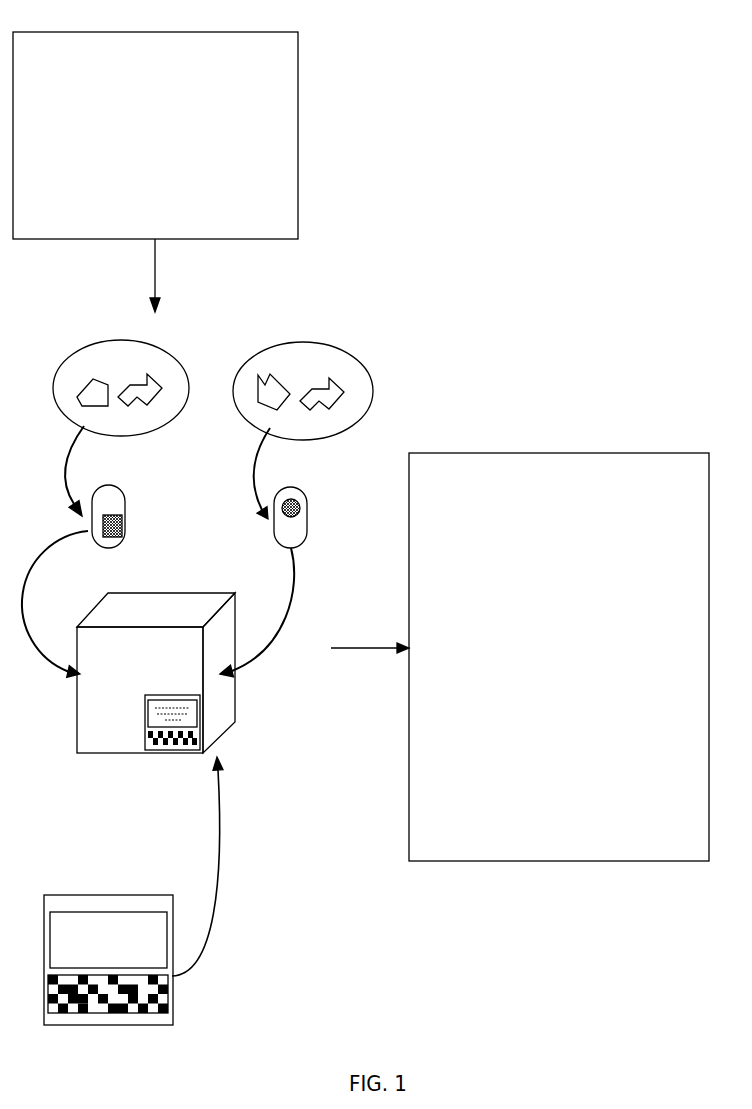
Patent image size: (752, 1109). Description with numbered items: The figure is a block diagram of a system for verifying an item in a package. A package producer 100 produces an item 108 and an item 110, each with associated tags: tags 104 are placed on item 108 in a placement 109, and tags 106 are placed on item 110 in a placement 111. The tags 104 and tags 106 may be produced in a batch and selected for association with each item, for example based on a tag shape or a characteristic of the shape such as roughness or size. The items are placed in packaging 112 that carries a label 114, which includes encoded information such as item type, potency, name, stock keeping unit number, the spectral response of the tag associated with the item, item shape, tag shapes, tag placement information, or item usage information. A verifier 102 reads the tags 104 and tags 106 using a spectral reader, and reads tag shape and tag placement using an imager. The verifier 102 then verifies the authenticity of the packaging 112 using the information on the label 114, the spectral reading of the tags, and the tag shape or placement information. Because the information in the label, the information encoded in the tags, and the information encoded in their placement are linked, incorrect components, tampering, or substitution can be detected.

The package producer 100 is at (155, 45).
The verifier 102 is at (552, 458).
The tags 104 is at (82, 367).
The tags 106 is at (267, 372).
The item 108 is at (144, 523).
The placement 109 is at (114, 512).
The item 110 is at (327, 507).
The placement 111 is at (294, 496).
The packaging 112 is at (132, 613).
The label 114 is at (92, 904).